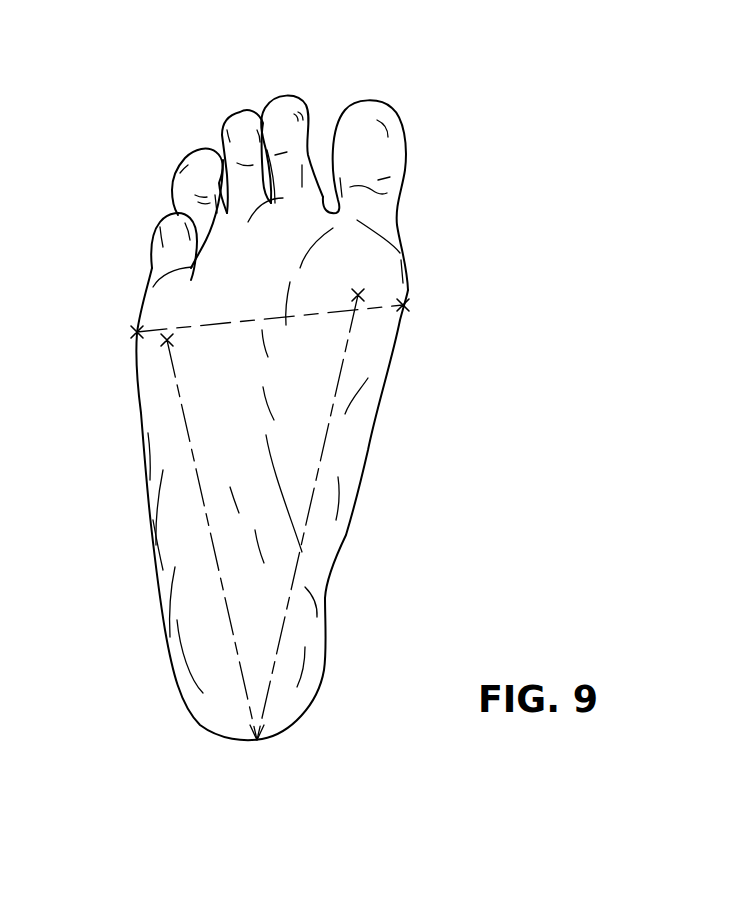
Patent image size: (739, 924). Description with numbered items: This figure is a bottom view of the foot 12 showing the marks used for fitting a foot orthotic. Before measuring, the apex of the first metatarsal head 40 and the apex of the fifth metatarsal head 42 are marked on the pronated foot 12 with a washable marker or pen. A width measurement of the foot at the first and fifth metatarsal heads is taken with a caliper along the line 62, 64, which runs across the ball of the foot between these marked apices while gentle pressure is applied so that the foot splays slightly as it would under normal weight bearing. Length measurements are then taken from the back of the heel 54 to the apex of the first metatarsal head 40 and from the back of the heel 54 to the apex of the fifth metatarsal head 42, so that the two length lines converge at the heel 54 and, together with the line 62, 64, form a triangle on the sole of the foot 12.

The foot 12 is at (512, 186).
The first metatarsal head 40 is at (359, 295).
The fifth metatarsal head 42 is at (167, 340).
The heel 54 is at (257, 740).
The line 62 is at (405, 305).
The line 64 is at (137, 333).